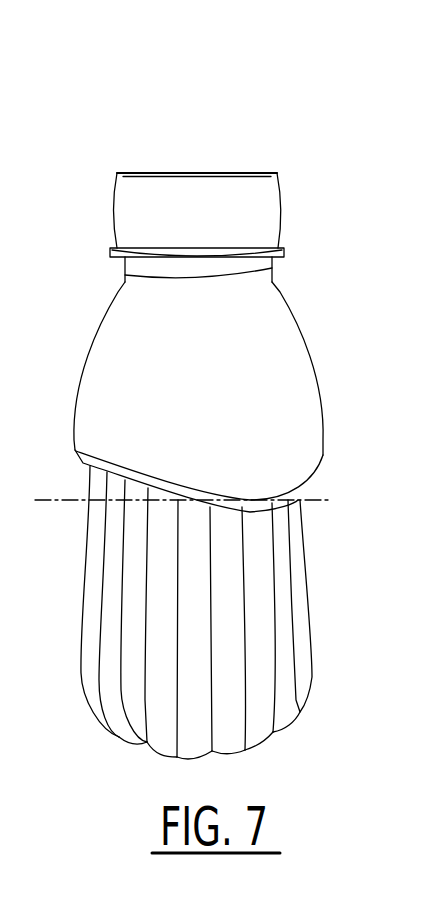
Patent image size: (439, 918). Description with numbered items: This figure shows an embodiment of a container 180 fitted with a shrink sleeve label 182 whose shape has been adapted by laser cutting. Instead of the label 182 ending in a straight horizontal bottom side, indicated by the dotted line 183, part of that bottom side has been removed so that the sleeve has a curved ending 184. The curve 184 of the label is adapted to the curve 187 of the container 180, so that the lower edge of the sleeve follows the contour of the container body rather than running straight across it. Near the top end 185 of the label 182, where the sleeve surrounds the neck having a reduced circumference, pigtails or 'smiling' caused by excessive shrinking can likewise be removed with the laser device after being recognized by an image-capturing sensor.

The container 180 is at (175, 158).
The label 182 is at (307, 392).
The dotted line 183 is at (45, 500).
The curved ending 184 is at (127, 472).
The top end 185 is at (282, 268).
The curve of the container 187 is at (88, 457).